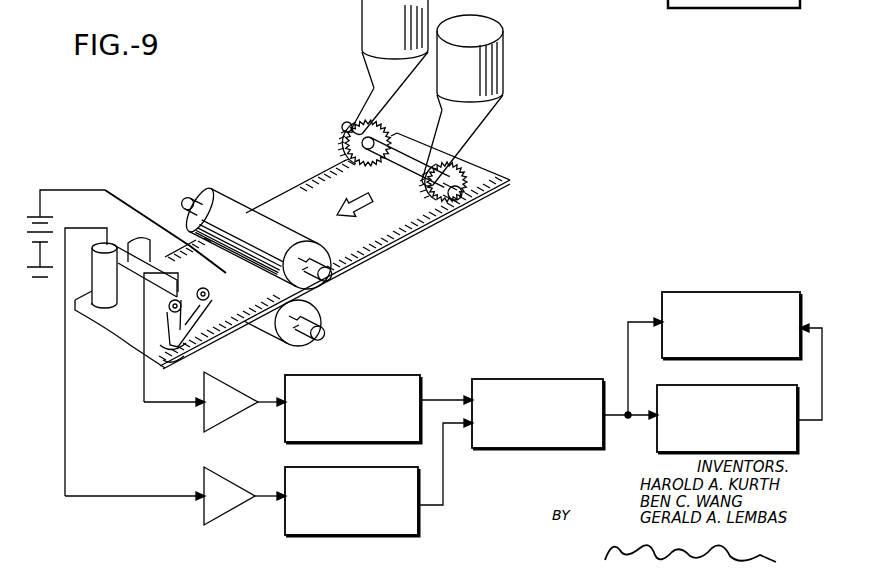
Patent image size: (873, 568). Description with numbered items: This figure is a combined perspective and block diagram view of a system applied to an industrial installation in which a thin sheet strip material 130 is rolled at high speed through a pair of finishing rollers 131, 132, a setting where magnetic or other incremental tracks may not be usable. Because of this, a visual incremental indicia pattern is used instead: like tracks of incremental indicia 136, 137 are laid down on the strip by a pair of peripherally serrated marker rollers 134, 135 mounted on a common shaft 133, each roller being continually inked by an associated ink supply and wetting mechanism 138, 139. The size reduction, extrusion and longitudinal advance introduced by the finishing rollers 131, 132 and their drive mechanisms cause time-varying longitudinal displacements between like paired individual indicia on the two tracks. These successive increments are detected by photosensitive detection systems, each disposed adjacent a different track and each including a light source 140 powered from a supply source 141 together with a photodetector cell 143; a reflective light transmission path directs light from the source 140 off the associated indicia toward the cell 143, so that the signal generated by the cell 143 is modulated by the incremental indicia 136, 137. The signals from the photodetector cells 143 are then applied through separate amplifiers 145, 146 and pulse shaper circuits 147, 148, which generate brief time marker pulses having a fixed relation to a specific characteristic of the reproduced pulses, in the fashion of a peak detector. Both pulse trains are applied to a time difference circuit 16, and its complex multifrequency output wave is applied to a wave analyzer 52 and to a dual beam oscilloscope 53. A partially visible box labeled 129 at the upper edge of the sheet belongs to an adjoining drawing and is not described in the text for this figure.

The box (partial, adjacent figure) 129 is at (712, 4).
The thin sheet strip material 130 is at (410, 244).
The finishing roller 131 is at (228, 192).
The finishing roller 132 is at (290, 338).
The common shaft 133 is at (406, 170).
The marker roller 134 is at (385, 128).
The marker roller 135 is at (462, 168).
The track of incremental indicia 136 is at (323, 172).
The track of incremental indicia 137 is at (375, 253).
The ink supply and wetting mechanism 138 is at (362, 10).
The ink supply and wetting mechanism 139 is at (503, 48).
The light source 140 is at (215, 300).
The supply source 141 is at (52, 217).
The photodetector cell 143 is at (152, 370).
The amplifier 145 is at (214, 378).
The amplifier 146 is at (213, 472).
The pulse shaper circuit 147 is at (375, 376).
The pulse shaper circuit 148 is at (370, 468).
The time difference circuit 16 is at (505, 379).
The wave analyzer 52 is at (688, 385).
The dual beam oscilloscope 53 is at (690, 292).